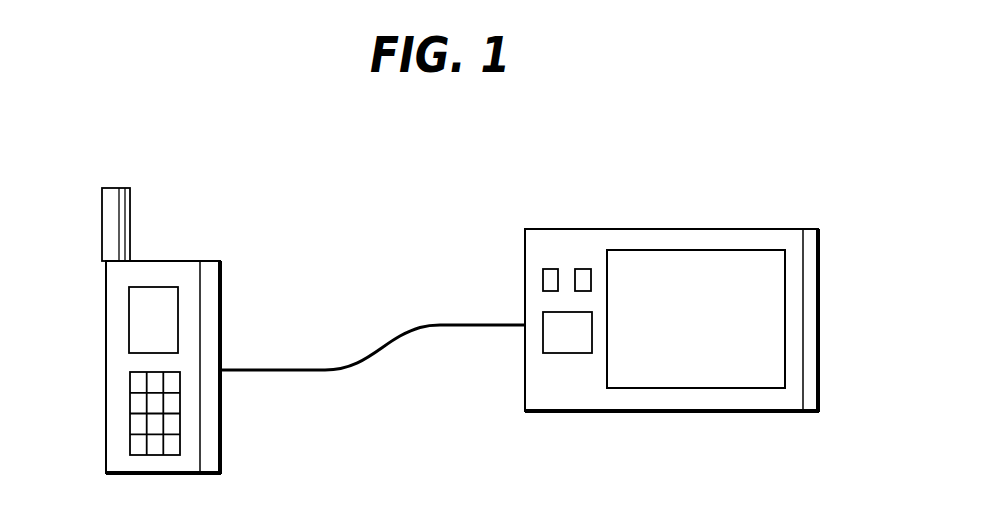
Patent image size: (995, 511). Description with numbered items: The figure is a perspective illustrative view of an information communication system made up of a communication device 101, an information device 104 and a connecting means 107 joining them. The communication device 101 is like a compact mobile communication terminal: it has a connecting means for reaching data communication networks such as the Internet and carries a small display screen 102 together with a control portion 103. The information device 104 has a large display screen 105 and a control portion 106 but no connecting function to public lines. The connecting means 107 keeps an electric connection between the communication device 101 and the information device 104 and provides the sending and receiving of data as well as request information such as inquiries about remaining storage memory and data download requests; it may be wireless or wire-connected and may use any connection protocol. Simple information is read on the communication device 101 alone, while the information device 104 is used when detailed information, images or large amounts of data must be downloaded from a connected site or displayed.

The communication device 101 is at (178, 268).
The small display screen 102 is at (138, 322).
The control portion 103 is at (135, 443).
The information device 104 is at (707, 229).
The large display screen 105 is at (770, 363).
The control portion 106 is at (573, 353).
The connecting means 107 is at (327, 372).